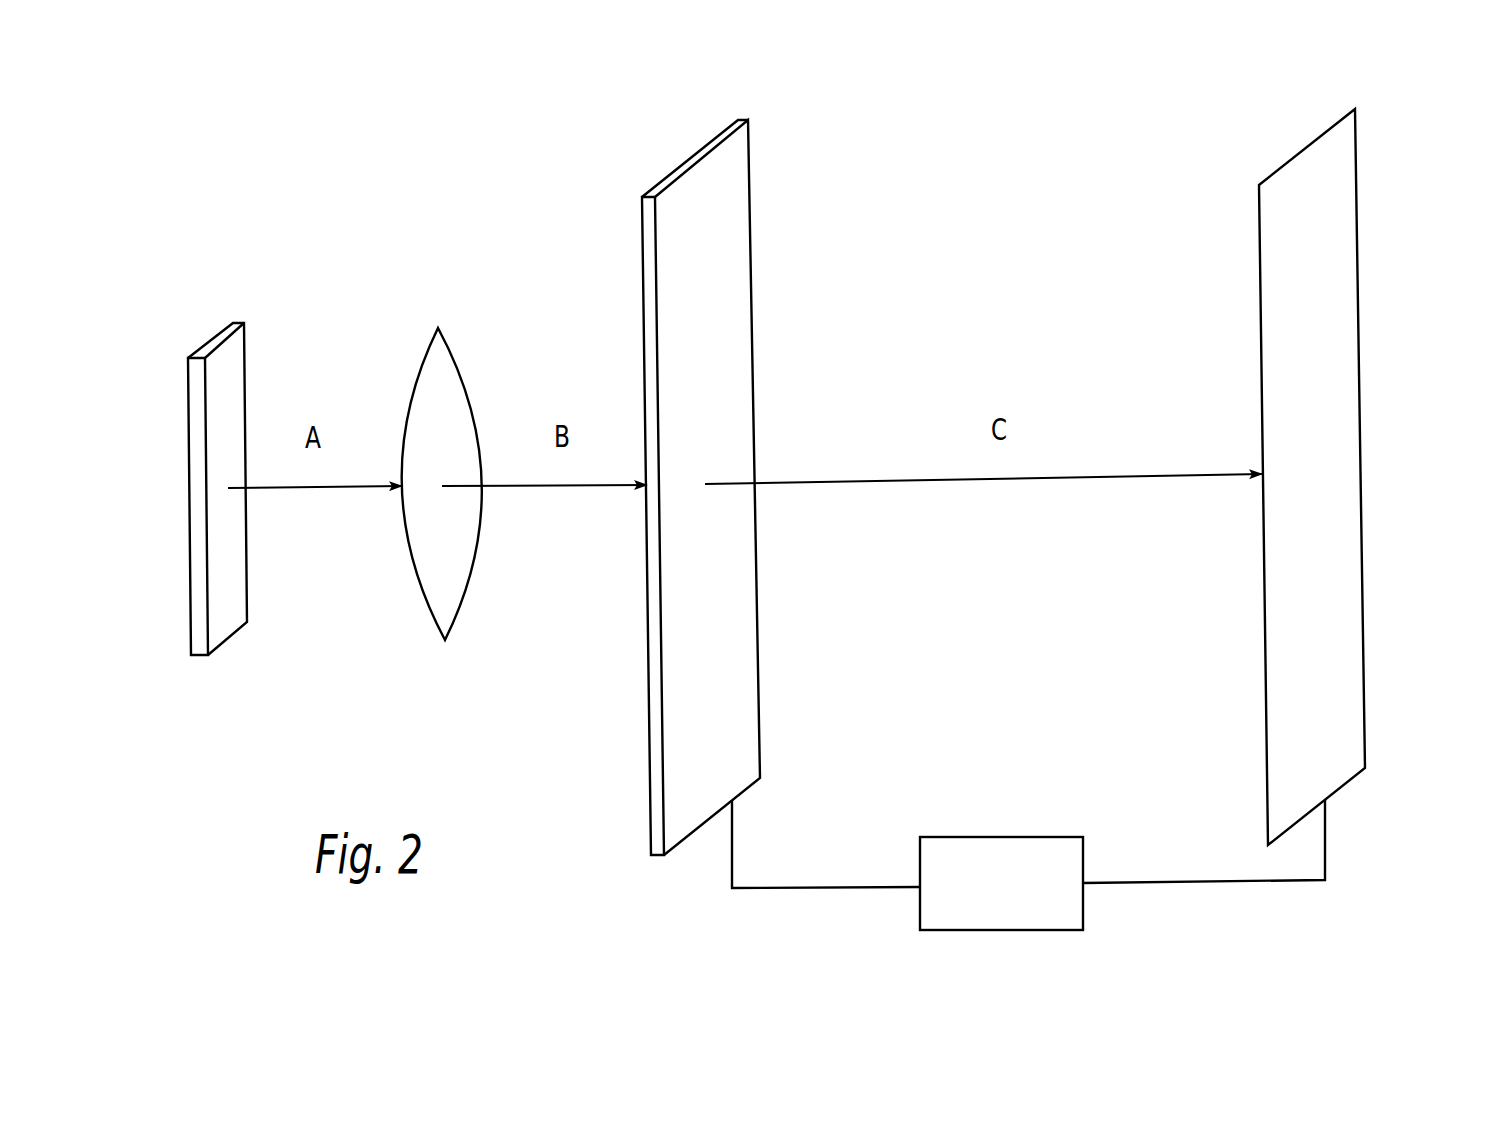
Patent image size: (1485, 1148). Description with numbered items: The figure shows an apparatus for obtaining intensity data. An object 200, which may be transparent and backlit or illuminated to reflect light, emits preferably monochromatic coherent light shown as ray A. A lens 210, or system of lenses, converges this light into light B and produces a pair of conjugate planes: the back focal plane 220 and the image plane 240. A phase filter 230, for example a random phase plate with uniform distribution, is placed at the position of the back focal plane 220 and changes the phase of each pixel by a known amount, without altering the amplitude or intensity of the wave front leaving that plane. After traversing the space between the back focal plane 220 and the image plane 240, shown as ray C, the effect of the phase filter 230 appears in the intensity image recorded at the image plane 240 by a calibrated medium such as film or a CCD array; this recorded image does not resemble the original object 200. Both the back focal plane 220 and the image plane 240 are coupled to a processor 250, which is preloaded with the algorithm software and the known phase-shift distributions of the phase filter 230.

The object 200 is at (223, 643).
The lens 210 is at (444, 641).
The back focal plane (BFP) 220 is at (686, 862).
The phase filter 230 is at (650, 748).
The image plane 240 is at (1363, 613).
The processor 250 is at (993, 837).